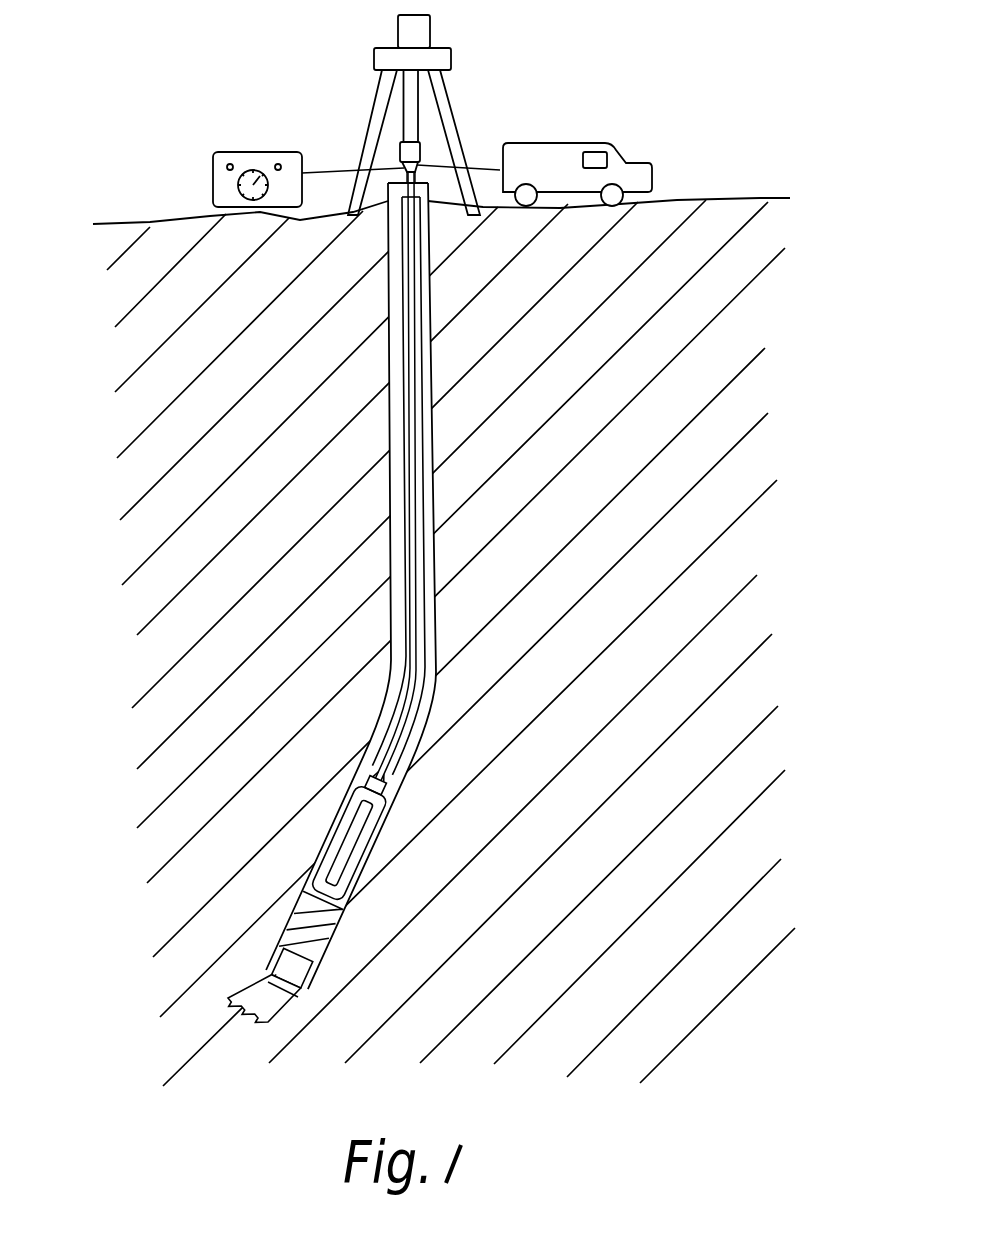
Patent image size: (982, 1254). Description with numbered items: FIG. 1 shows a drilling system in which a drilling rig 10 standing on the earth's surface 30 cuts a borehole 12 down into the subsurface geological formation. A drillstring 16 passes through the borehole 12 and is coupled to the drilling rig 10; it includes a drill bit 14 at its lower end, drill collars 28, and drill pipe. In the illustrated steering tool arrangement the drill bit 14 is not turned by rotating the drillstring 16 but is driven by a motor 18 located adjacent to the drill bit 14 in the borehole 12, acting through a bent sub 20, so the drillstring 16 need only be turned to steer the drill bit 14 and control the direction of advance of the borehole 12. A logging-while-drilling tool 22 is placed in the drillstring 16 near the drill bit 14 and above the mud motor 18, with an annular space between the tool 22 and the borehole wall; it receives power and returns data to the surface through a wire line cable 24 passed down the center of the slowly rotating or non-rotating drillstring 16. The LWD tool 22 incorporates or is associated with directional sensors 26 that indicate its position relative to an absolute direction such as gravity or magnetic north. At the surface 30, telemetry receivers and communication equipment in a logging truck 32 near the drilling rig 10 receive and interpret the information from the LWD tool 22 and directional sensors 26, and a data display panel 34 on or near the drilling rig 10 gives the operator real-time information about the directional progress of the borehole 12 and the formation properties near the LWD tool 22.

The drilling rig 10 is at (458, 93).
The borehole 12 is at (436, 548).
The drill bit 14 is at (242, 990).
The drillstring 16 is at (427, 500).
The motor 18 is at (328, 922).
The bent sub 20 is at (314, 973).
The logging-while-drilling (LWD) tool 22 is at (358, 853).
The wire line cable 24 is at (412, 380).
The directional sensors 26 is at (366, 802).
The drill collars 28 is at (372, 822).
The earth's surface 30 is at (117, 227).
The logging truck 32 is at (563, 143).
The data display panel 34 is at (213, 173).